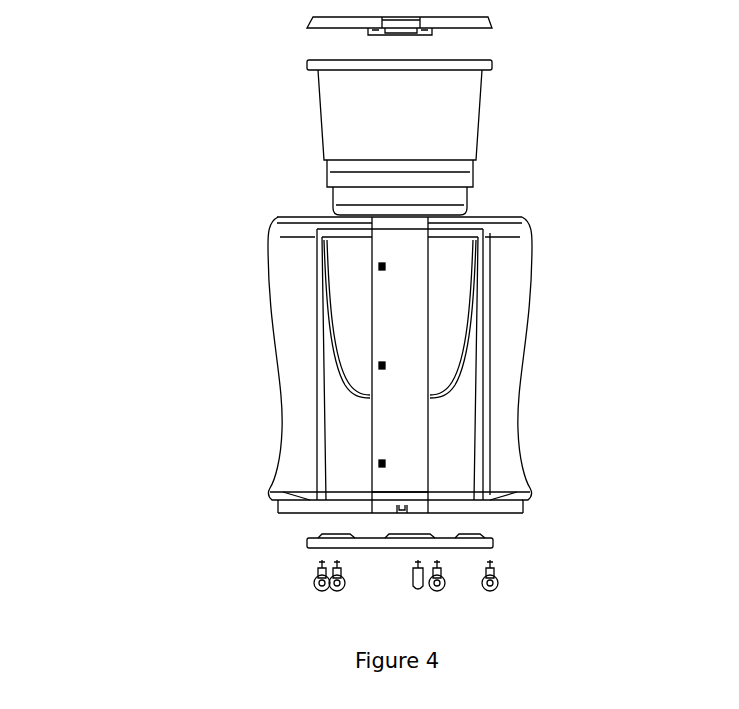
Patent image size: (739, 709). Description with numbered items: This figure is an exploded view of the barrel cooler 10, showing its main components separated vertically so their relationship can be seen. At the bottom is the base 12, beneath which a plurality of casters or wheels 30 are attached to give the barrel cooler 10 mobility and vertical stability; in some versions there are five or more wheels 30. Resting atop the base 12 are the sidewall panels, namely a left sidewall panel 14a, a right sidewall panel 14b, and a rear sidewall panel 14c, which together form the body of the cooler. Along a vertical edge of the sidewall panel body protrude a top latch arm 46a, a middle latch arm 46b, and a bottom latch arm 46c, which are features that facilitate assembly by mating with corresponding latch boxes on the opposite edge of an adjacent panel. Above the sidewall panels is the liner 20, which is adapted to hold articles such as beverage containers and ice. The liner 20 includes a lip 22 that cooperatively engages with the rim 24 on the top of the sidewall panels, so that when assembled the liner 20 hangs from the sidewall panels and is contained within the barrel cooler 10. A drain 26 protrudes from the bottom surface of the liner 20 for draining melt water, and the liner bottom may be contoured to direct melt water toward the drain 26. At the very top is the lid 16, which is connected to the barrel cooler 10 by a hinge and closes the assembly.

The barrel cooler 10 is at (110, 200).
The base 12 is at (493, 540).
The left sidewall panel 14a is at (277, 331).
The right sidewall panel 14b is at (526, 363).
The rear sidewall panel 14c is at (407, 418).
The lid 16 is at (492, 25).
The liner 20 is at (482, 117).
The lip 22 is at (492, 65).
The rim 24 is at (522, 216).
The drain 26 is at (333, 214).
The casters or wheels 30 is at (497, 580).
The top latch arm 46a is at (378, 266).
The middle latch arm 46b is at (378, 365).
The bottom latch arm 46c is at (378, 464).